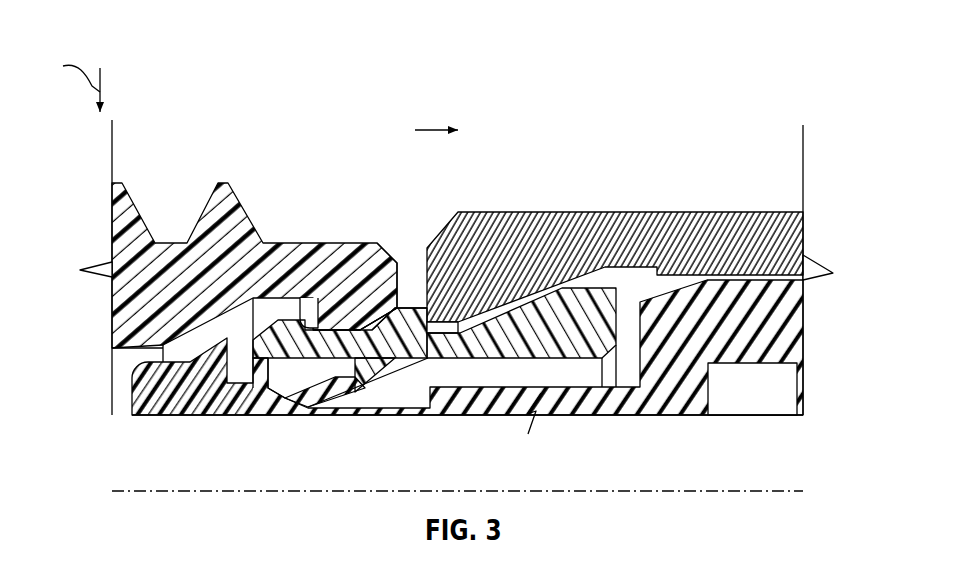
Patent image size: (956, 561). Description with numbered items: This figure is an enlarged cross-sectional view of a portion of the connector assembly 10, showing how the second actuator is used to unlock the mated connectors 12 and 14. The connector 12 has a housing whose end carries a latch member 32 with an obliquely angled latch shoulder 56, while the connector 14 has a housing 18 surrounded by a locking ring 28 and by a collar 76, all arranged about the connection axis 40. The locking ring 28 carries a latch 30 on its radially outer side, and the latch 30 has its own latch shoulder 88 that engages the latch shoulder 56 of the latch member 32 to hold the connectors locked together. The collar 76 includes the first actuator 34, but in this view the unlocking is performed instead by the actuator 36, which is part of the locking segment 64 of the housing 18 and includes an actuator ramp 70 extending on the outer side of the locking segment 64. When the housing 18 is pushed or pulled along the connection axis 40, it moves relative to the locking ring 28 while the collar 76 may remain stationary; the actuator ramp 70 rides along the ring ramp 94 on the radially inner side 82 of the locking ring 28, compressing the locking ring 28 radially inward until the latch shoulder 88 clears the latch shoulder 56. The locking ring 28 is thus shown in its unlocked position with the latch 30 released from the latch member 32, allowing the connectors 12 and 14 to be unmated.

The connector assembly 10 is at (445, 260).
The connector 12 is at (249, 267).
The connector 14 is at (488, 301).
The housing 18 is at (488, 301).
The locking ring 28 is at (558, 332).
The latch 30 is at (343, 319).
The latch member 32 is at (334, 252).
The actuator 34 is at (615, 321).
The actuator 36 is at (306, 402).
The connection axis 40 is at (772, 490).
The latch shoulder 56 is at (306, 295).
The locking segment 64 is at (405, 420).
The actuator ramp 70 is at (347, 388).
The collar 76 is at (665, 232).
The radially inner side 82 is at (503, 400).
The latch shoulder 88 is at (380, 325).
The ring ramp 94 is at (399, 308).